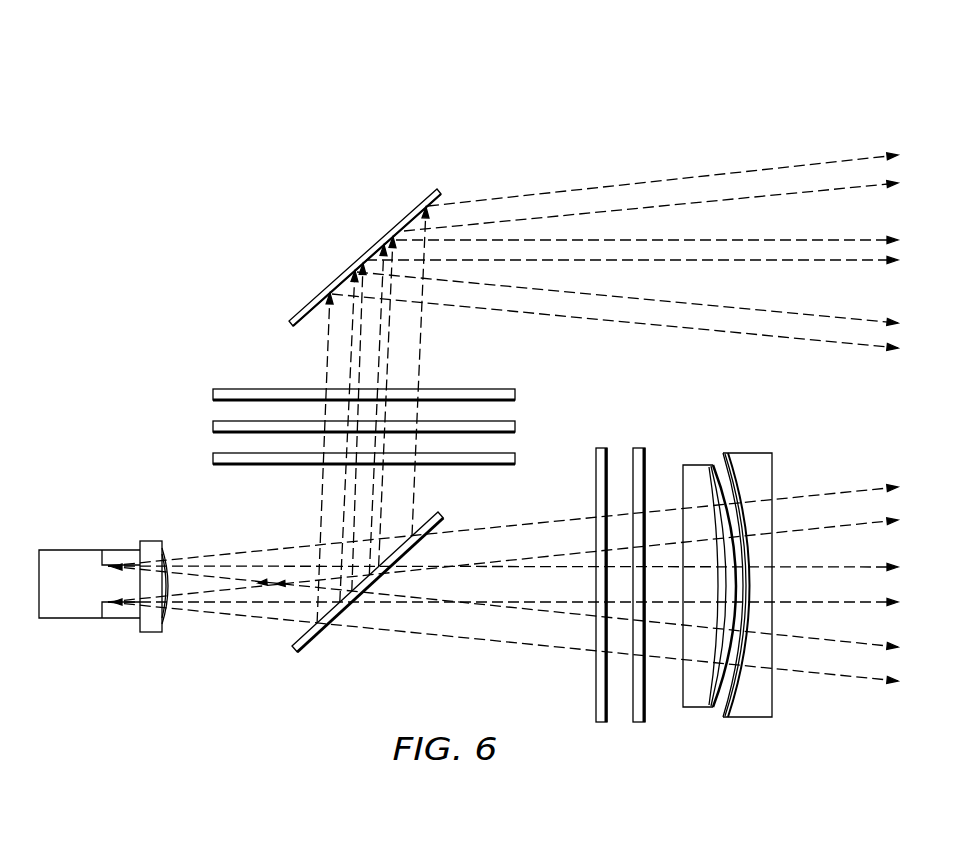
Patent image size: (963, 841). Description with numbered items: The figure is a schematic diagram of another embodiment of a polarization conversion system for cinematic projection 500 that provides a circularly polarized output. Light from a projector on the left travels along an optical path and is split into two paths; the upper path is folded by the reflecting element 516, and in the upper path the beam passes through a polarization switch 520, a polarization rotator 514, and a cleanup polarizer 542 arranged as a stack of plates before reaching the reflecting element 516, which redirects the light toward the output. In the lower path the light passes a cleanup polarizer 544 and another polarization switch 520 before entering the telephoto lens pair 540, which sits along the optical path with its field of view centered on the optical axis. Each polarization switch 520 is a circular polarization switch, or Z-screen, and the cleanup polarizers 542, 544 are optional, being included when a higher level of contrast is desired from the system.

The polarization conversion system for cinematic projection 500 is at (384, 135).
The mirror 516 is at (362, 256).
The polarization switch 520 is at (213, 394).
The display panel 514 is at (213, 427).
The cleanup polarizer 542 is at (213, 458).
The cleanup polarizer 544 is at (601, 723).
The telephoto lens pair 540 is at (683, 724).